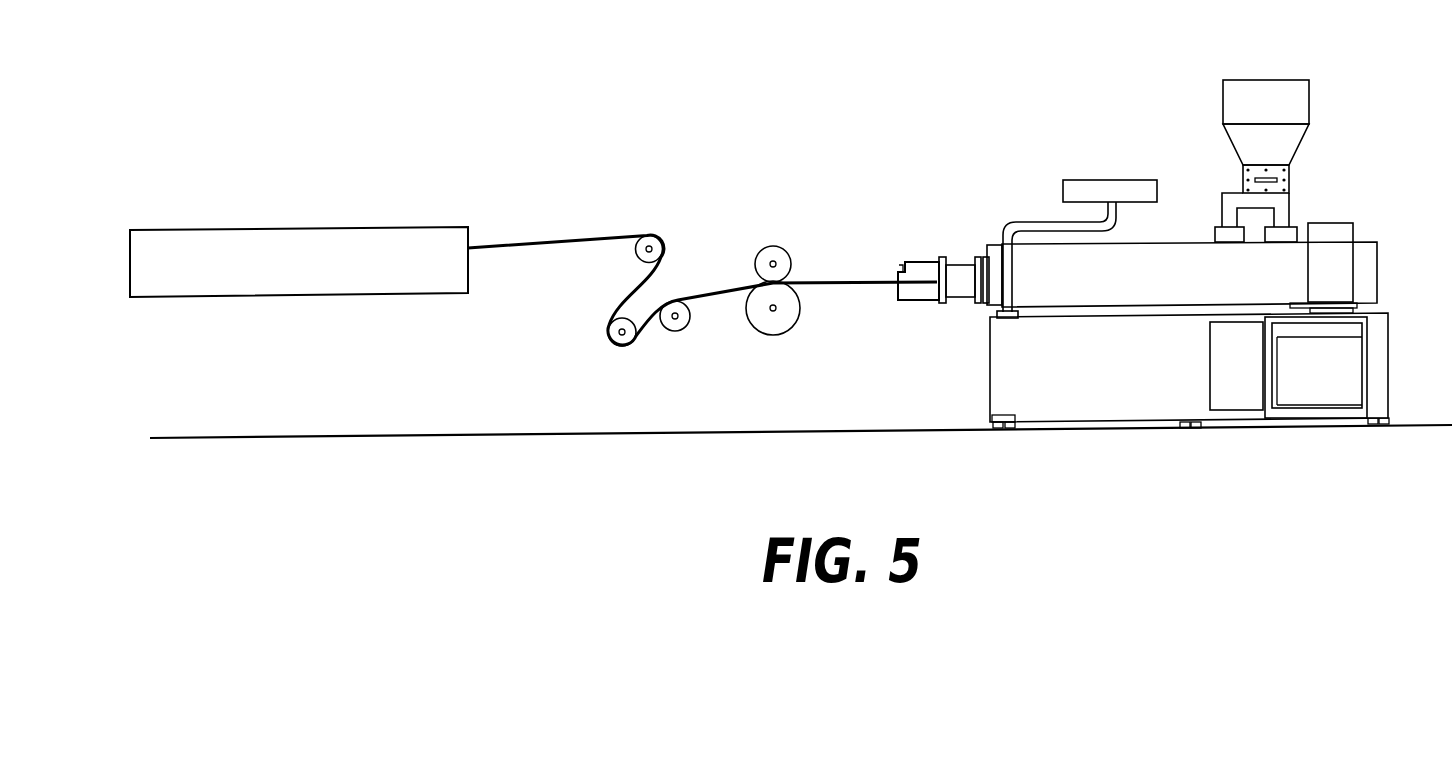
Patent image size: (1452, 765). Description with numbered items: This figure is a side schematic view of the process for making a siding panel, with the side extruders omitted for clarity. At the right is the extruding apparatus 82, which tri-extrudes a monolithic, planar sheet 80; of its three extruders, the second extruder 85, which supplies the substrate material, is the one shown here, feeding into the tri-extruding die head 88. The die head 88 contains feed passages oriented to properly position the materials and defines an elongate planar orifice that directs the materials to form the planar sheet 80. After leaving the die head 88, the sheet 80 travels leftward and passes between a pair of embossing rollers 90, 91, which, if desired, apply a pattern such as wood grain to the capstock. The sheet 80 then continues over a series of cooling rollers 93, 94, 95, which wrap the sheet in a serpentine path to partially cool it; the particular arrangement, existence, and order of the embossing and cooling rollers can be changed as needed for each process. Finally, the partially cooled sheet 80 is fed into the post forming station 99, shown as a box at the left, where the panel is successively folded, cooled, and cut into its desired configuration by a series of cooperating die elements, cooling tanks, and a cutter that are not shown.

The planar sheet 80 is at (876, 282).
The extruding apparatus 82 is at (1212, 231).
The second extruder 85 is at (1363, 250).
The tri-extruding die head 88 is at (929, 262).
The embossing roller 90 is at (773, 254).
The embossing roller 91 is at (779, 320).
The cooling roller 93 is at (681, 320).
The cooling roller 94 is at (611, 339).
The cooling roller 95 is at (649, 242).
The post forming station 99 is at (334, 238).